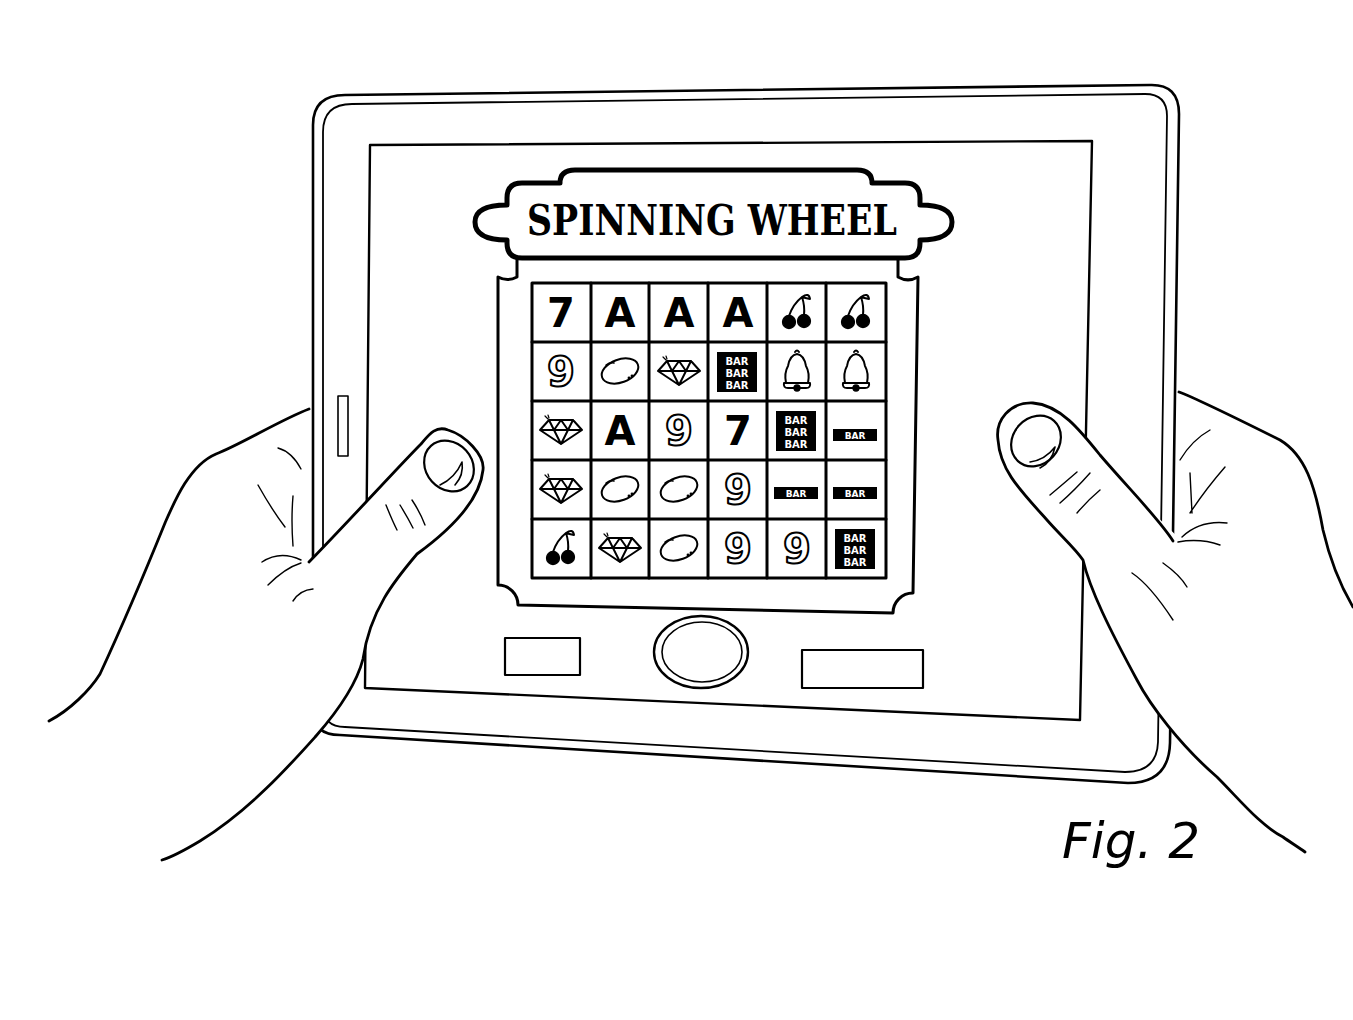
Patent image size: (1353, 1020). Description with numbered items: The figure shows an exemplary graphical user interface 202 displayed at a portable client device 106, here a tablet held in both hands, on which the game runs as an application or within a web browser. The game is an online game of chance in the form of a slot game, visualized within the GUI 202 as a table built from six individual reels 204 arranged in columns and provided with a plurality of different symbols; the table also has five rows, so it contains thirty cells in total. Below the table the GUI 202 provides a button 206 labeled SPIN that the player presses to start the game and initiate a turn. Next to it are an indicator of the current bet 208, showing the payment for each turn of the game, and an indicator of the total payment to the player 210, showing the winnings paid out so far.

The portable client device 106 is at (1182, 123).
The graphical user interface 202 is at (1035, 185).
The reels 204 is at (884, 425).
The button 206 is at (708, 688).
The indicator of the current bet 208 is at (552, 676).
The indicator of the total payment to the player 210 is at (877, 688).